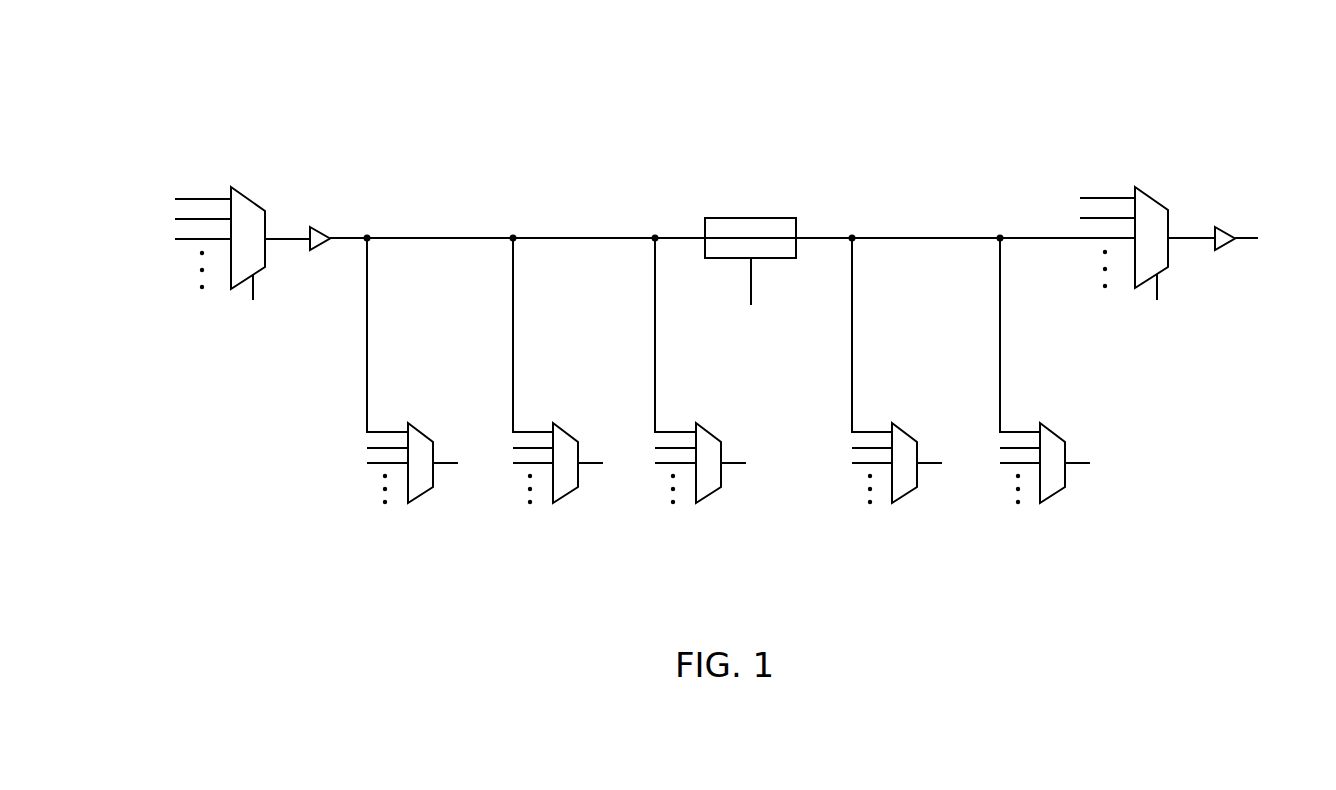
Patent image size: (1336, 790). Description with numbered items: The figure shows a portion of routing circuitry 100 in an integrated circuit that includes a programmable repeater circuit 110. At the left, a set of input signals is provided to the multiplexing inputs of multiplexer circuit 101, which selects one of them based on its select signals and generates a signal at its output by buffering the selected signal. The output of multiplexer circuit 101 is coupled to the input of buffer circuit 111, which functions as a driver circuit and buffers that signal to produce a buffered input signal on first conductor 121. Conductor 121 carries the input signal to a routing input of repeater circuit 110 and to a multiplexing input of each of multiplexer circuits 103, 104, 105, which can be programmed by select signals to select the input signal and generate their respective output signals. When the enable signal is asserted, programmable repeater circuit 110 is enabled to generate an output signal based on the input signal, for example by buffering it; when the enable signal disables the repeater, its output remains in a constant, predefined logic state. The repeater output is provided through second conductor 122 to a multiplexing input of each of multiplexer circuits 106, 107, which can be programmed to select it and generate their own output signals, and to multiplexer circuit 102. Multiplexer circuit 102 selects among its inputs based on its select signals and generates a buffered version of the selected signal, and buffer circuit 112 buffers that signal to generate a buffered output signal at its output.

The routing circuitry 100 is at (397, 111).
The multiplexer circuit 101 is at (252, 202).
The multiplexer circuit 102 is at (1155, 199).
The multiplexer circuit 103 is at (421, 432).
The multiplexer circuit 104 is at (566, 432).
The multiplexer circuit 105 is at (709, 432).
The multiplexer circuit 106 is at (905, 432).
The multiplexer circuit 107 is at (1053, 432).
The programmable repeater circuit 110 is at (757, 218).
The buffer circuit 111 is at (320, 230).
The buffer circuit 112 is at (1229, 230).
The first conductor 121 is at (479, 229).
The second conductor 122 is at (1029, 229).